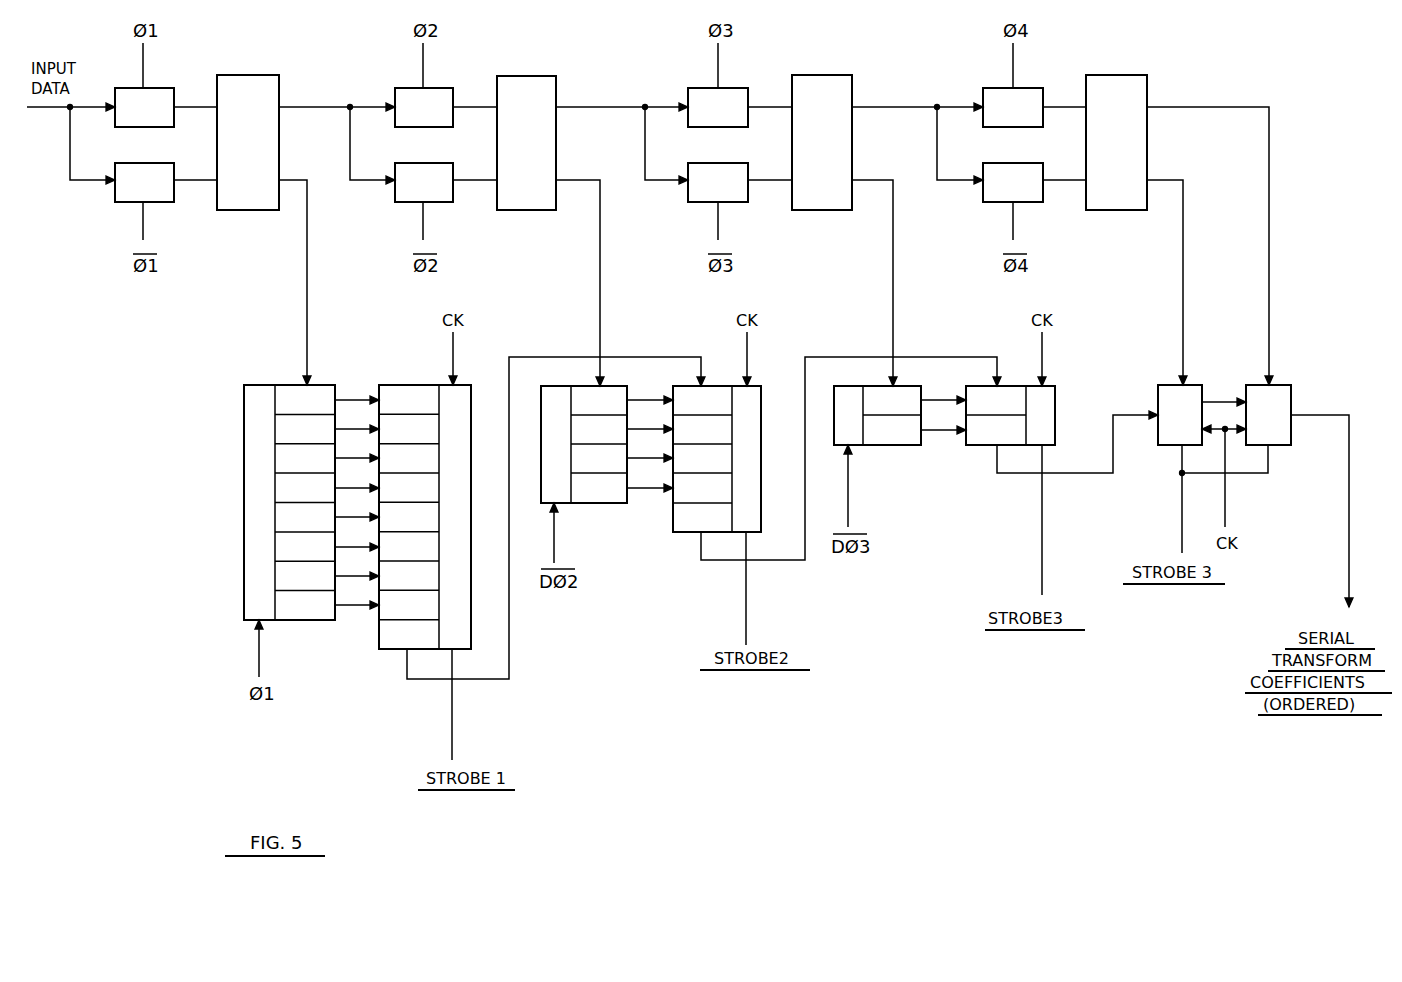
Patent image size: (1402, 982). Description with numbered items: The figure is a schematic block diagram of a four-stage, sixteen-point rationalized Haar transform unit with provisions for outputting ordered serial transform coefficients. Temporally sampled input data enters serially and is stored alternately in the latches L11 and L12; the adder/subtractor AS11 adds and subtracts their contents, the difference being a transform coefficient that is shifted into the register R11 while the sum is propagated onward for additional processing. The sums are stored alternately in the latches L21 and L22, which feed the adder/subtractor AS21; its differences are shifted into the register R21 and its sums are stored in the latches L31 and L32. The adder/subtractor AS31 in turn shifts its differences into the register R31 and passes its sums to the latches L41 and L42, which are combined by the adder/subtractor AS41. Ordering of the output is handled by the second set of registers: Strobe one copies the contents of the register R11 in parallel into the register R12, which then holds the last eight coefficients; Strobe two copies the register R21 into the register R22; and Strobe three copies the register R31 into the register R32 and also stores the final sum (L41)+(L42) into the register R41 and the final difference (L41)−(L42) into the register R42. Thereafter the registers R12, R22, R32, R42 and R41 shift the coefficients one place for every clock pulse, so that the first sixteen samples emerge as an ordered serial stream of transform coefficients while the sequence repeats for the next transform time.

The latch L11 is at (144, 107).
The latch L12 is at (144, 182).
The adder/subtractor AS11 is at (238, 90).
The latch L21 is at (424, 107).
The latch L22 is at (424, 182).
The adder/subtractor AS21 is at (516, 90).
The latch L31 is at (718, 107).
The latch L32 is at (718, 182).
The adder/subtractor AS31 is at (816, 90).
The latch L41 is at (1013, 107).
The latch L42 is at (1013, 182).
The adder/subtractor AS41 is at (1103, 90).
The register R11 is at (289, 502).
The register R12 is at (425, 517).
The register R21 is at (584, 444).
The register R22 is at (718, 459).
The register R31 is at (877, 415).
The register R32 is at (1012, 415).
The register R41 is at (1180, 415).
The register R42 is at (1268, 415).